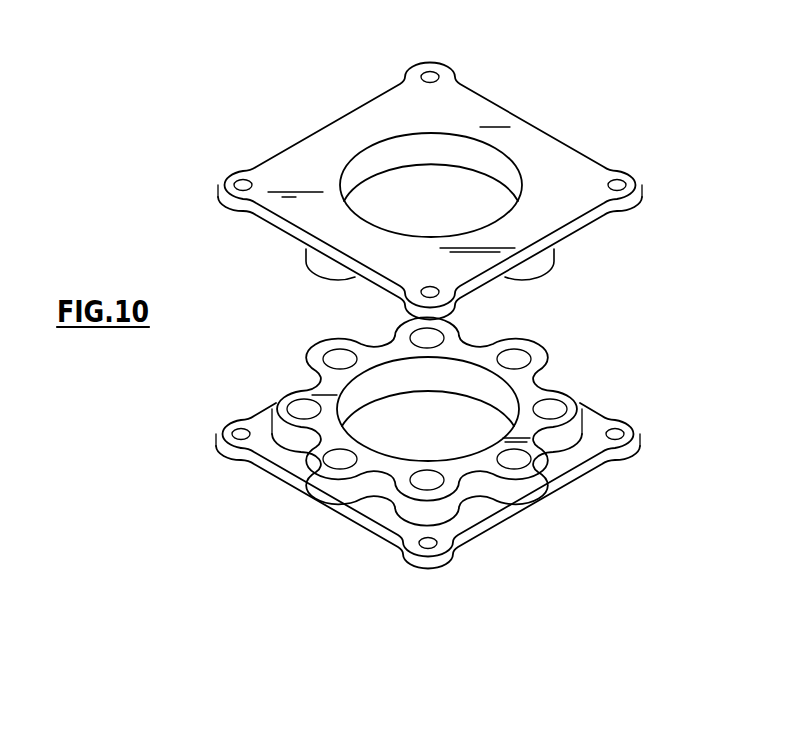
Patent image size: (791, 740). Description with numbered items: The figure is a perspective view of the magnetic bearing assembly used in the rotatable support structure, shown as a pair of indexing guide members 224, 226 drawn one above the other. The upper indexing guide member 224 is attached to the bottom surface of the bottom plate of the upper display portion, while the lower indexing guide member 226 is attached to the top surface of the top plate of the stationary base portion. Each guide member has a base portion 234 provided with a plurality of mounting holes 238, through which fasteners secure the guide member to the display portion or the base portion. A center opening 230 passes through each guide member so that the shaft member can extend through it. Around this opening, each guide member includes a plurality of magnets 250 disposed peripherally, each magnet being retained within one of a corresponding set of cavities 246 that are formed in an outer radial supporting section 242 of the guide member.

The indexing guide member 224 is at (512, 72).
The indexing guide member 226 is at (630, 470).
The center opening 230 is at (410, 173).
The base portion 234 is at (535, 147).
The mounting holes 238 is at (427, 75).
The outer radial supporting section 242 is at (310, 262).
The cavities 246 is at (417, 335).
The magnets 250 is at (340, 462).